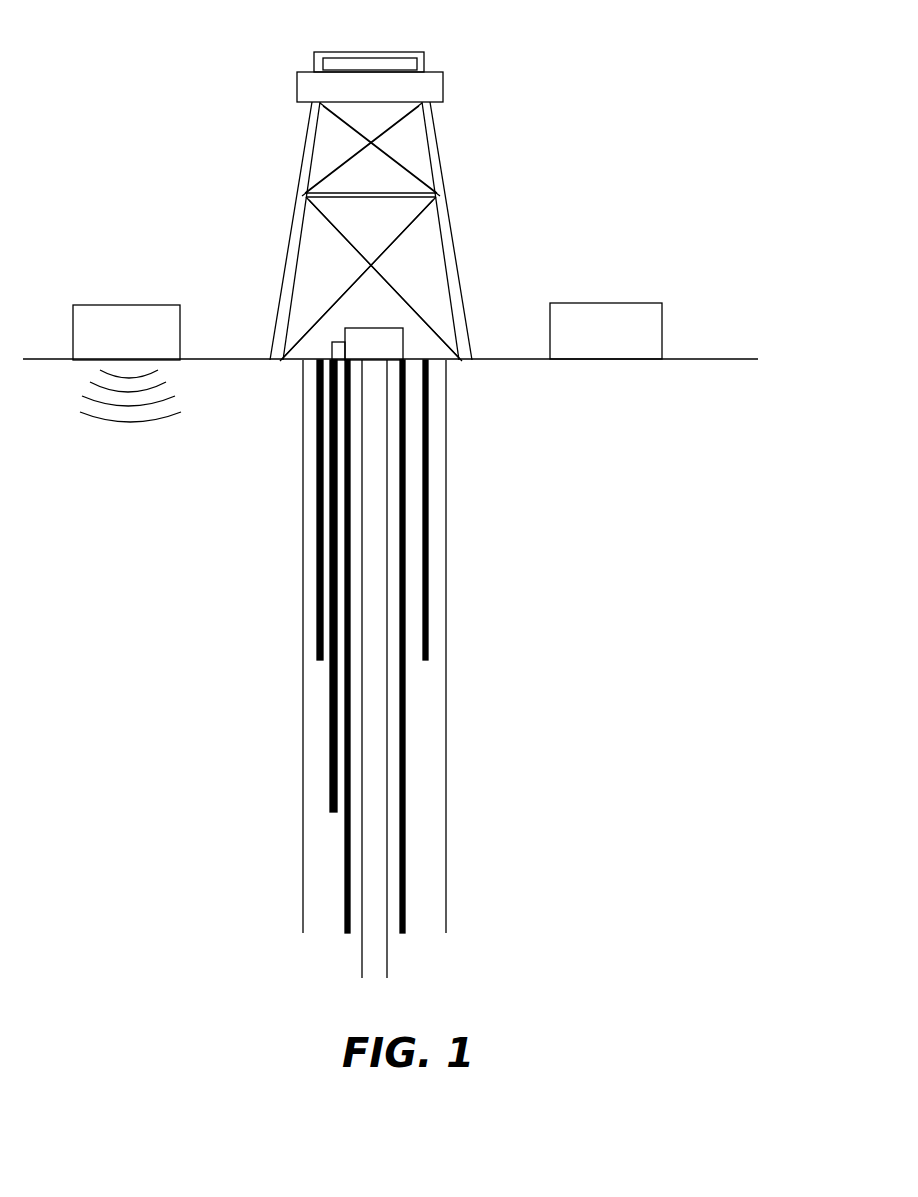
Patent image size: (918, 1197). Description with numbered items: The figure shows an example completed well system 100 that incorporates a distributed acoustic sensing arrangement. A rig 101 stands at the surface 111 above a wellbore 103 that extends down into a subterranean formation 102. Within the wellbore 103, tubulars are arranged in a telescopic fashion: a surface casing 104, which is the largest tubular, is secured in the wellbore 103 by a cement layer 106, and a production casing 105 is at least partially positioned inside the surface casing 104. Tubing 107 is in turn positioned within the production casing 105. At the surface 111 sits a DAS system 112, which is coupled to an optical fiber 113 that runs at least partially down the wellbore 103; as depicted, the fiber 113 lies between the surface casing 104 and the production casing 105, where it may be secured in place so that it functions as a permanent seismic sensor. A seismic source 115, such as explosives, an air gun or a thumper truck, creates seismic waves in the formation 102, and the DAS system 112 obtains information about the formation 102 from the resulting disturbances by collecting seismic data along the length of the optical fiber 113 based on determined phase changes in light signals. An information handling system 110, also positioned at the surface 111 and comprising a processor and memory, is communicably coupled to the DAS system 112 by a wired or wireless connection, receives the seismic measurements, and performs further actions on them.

The completed well system 100 is at (606, 128).
The rig 101 is at (445, 83).
The subterranean formation 102 is at (627, 470).
The wellbore 103 is at (307, 480).
The surface casing 104 is at (427, 448).
The production casing 105 is at (403, 555).
The cement layer 106 is at (436, 497).
The tubing 107 is at (362, 632).
The information handling system 110 is at (587, 343).
The surface 111 is at (713, 358).
The distributed acoustic sensing (DAS) system 112 is at (357, 354).
The optical fiber 113 is at (332, 462).
The seismic source 115 is at (108, 343).